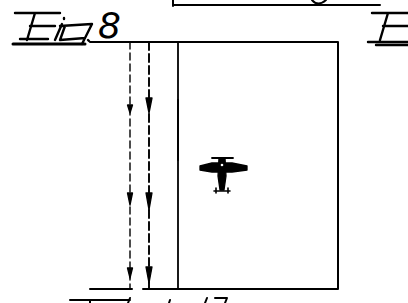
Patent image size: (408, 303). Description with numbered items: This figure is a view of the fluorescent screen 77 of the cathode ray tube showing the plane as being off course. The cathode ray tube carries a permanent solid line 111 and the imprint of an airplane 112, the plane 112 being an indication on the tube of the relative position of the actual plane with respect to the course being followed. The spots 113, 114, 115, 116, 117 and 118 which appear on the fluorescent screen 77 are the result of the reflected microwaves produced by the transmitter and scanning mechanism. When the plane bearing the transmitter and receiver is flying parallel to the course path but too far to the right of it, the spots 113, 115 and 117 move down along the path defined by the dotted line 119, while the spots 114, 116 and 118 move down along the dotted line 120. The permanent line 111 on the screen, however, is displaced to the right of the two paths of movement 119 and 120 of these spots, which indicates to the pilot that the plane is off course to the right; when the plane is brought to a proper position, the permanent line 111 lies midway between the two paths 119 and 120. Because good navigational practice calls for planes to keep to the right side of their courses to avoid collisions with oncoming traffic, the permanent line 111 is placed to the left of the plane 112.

The fluorescent screen 77 is at (307, 225).
The solid line 111 is at (180, 132).
The imprint of an airplane 112 is at (233, 167).
The spot 113 is at (130, 258).
The spot 114 is at (149, 258).
The spot 115 is at (129, 168).
The spot 116 is at (149, 168).
The spot 117 is at (130, 85).
The spot 118 is at (149, 84).
The dotted line 119 is at (133, 213).
The dotted line 120 is at (149, 233).